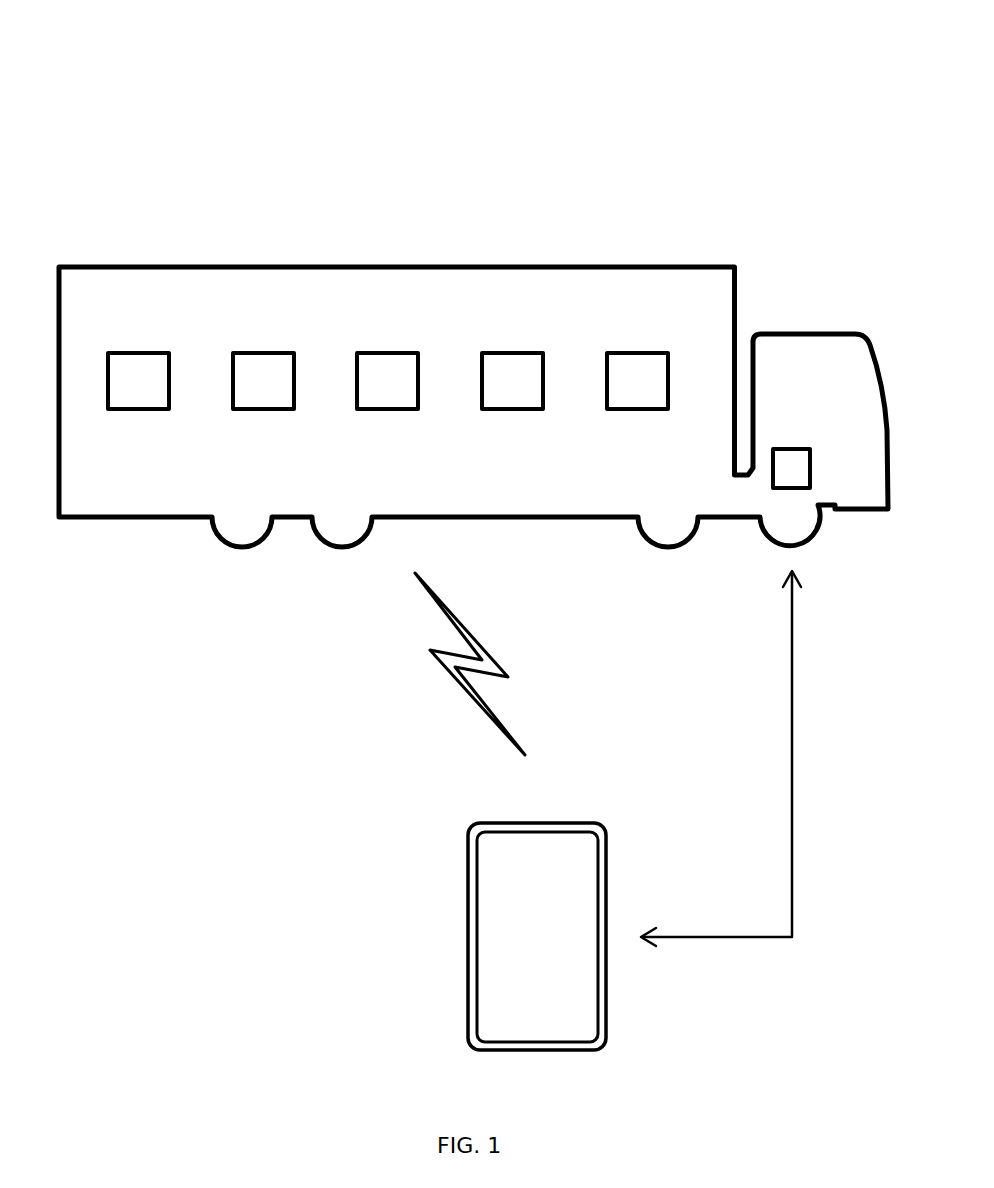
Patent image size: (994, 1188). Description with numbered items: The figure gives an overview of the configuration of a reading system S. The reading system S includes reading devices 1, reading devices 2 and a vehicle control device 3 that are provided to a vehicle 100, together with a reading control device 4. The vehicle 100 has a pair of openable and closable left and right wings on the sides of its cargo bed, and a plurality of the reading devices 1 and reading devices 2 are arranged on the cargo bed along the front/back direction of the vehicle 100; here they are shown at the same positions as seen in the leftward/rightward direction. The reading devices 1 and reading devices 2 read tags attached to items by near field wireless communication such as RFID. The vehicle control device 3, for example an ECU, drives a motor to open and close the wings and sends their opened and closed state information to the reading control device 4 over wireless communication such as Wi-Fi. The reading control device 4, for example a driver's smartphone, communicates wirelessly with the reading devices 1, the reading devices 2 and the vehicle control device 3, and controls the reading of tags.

The reading system S is at (450, 106).
The vehicle 100 is at (654, 266).
The reading devices 1 is at (403, 362).
The reading devices 2 is at (155, 352).
The vehicle control device 3 is at (808, 450).
The reading control device 4 is at (573, 822).